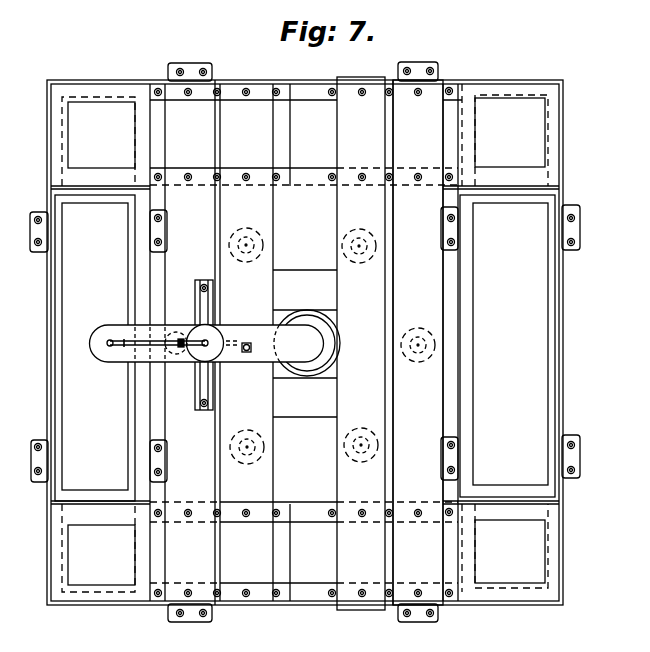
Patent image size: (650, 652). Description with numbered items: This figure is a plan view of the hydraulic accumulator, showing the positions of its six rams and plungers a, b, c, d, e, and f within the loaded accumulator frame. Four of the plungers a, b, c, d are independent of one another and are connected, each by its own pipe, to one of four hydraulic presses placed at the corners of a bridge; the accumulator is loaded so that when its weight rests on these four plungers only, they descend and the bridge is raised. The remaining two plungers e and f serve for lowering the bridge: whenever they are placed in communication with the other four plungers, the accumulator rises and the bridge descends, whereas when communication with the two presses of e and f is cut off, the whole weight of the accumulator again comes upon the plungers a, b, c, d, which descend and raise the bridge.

The ram and plunger a is at (418, 336).
The ram and plunger b is at (361, 435).
The ram and plunger c is at (247, 436).
The ram and plunger d is at (170, 334).
The ram and plunger e is at (246, 237).
The ram and plunger f is at (359, 237).